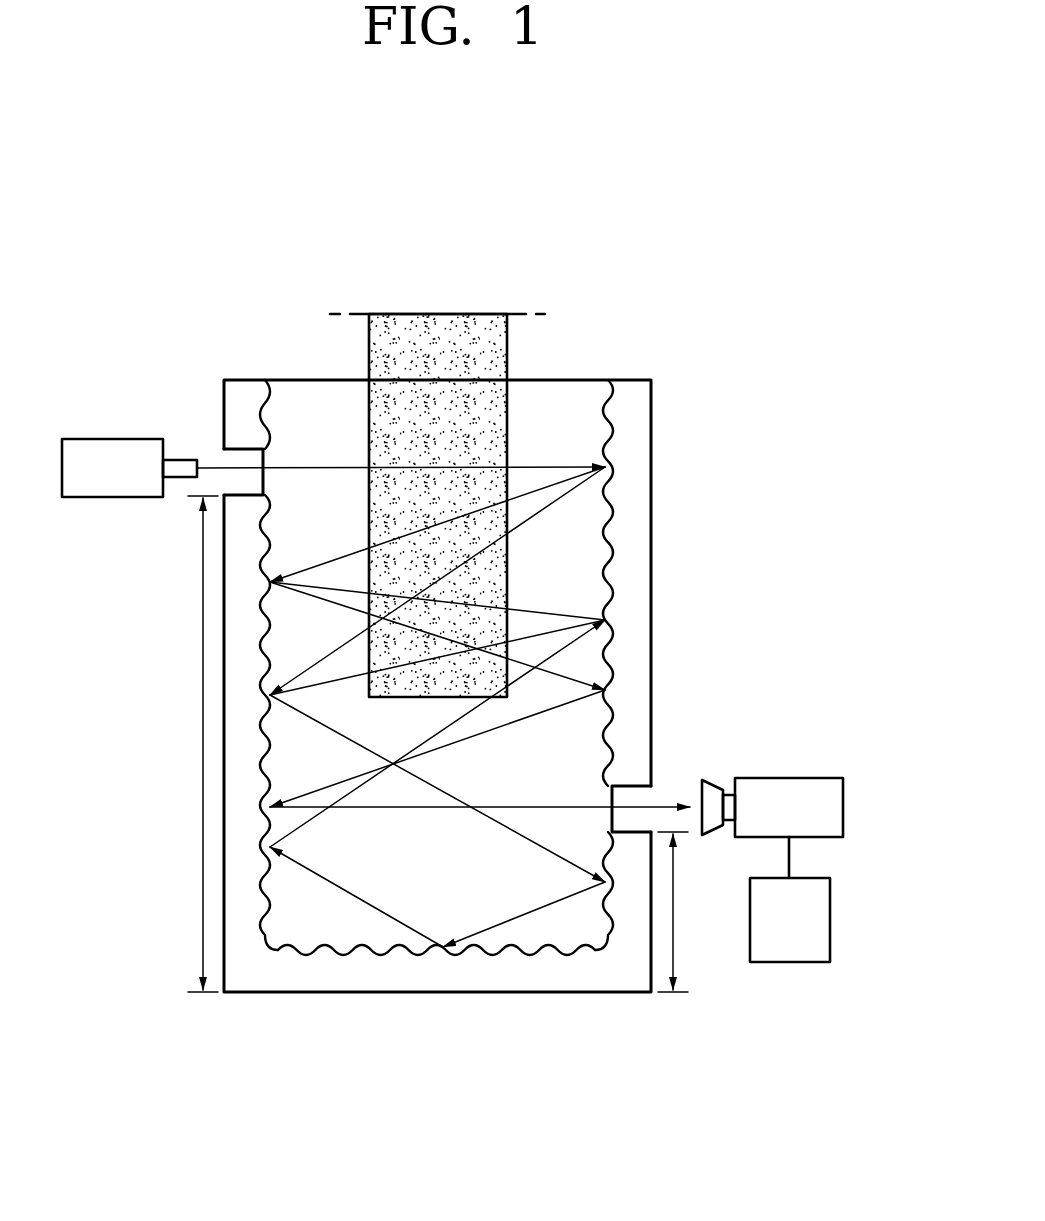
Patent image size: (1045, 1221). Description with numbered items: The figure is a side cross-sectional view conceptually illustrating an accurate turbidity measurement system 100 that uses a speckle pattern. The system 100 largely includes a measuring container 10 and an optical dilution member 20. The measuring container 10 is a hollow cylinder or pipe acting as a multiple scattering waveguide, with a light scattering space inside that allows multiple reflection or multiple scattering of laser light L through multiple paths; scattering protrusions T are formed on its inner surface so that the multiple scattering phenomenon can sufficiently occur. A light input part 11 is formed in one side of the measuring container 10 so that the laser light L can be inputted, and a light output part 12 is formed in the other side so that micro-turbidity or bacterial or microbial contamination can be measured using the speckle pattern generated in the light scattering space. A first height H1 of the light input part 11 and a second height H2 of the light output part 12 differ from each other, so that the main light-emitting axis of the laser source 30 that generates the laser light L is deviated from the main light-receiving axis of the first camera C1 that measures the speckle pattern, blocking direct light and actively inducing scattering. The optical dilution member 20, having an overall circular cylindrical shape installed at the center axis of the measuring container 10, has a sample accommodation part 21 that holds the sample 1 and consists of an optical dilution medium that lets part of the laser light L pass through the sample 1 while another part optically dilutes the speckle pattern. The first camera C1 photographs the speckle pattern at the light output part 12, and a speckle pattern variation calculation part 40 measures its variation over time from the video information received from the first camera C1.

The accurate turbidity measurement system 100 is at (148, 268).
The sample 1 is at (430, 342).
The sample accommodation part 21 is at (505, 430).
The laser light L is at (315, 467).
The scattering protrusions T is at (610, 465).
The light input part 11 is at (242, 450).
The measuring container 10 is at (652, 516).
The laser source 30 is at (90, 497).
The light output part 12 is at (633, 788).
The first camera C1 is at (843, 808).
The speckle pattern variation calculation part 40 is at (830, 920).
The optical dilution member 20 is at (385, 878).
The first height H1 is at (190, 744).
The second height H2 is at (686, 912).